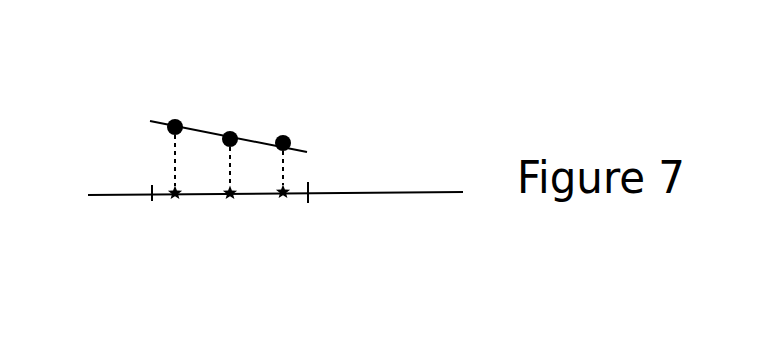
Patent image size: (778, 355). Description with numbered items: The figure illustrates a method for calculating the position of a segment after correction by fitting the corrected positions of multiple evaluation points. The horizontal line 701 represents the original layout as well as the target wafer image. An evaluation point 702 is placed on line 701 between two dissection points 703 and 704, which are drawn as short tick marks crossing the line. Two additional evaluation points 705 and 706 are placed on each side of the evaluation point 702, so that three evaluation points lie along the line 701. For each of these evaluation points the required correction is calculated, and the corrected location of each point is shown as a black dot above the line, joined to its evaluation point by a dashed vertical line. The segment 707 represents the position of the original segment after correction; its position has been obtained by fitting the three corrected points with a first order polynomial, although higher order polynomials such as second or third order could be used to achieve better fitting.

The line 701 is at (402, 194).
The evaluation point 702 is at (230, 200).
The dissection point 703 is at (152, 183).
The dissection point 704 is at (309, 201).
The additional evaluation point 705 is at (172, 199).
The additional evaluation point 706 is at (284, 200).
The segment 707 is at (258, 137).